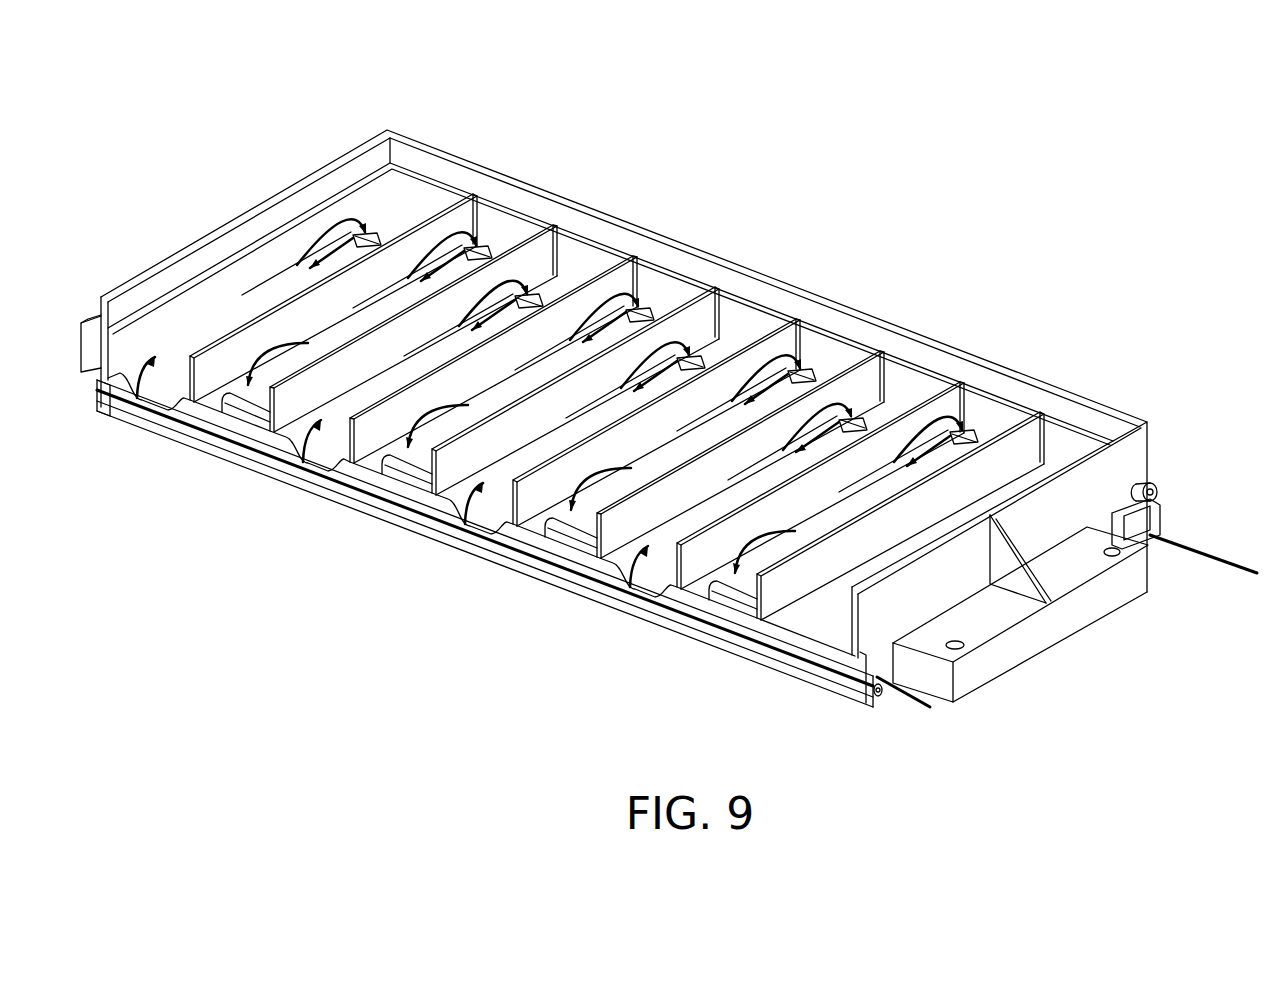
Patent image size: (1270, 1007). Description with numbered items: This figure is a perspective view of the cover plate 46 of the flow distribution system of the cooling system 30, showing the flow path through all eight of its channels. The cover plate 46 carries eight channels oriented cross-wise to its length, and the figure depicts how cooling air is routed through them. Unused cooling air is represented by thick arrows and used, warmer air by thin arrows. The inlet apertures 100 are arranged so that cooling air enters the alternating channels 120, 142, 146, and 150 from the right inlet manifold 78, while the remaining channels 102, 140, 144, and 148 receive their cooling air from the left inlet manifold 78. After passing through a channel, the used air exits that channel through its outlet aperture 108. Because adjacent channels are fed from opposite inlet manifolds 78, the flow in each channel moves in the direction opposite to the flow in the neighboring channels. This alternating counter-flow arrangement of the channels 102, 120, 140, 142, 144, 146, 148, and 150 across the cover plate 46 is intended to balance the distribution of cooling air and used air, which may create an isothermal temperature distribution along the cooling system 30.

The cooling system 30 is at (1060, 226).
The cover plate 46 is at (1103, 421).
The inlet manifold 78 is at (1158, 530).
The inlet aperture 100 is at (130, 393).
The channel 102 is at (868, 486).
The outlet aperture 108 is at (223, 397).
The channel 120 is at (790, 453).
The channel 140 is at (713, 421).
The channel 142 is at (621, 397).
The channel 144 is at (545, 360).
The channel 146 is at (446, 345).
The channel 148 is at (389, 298).
The channel 150 is at (261, 283).